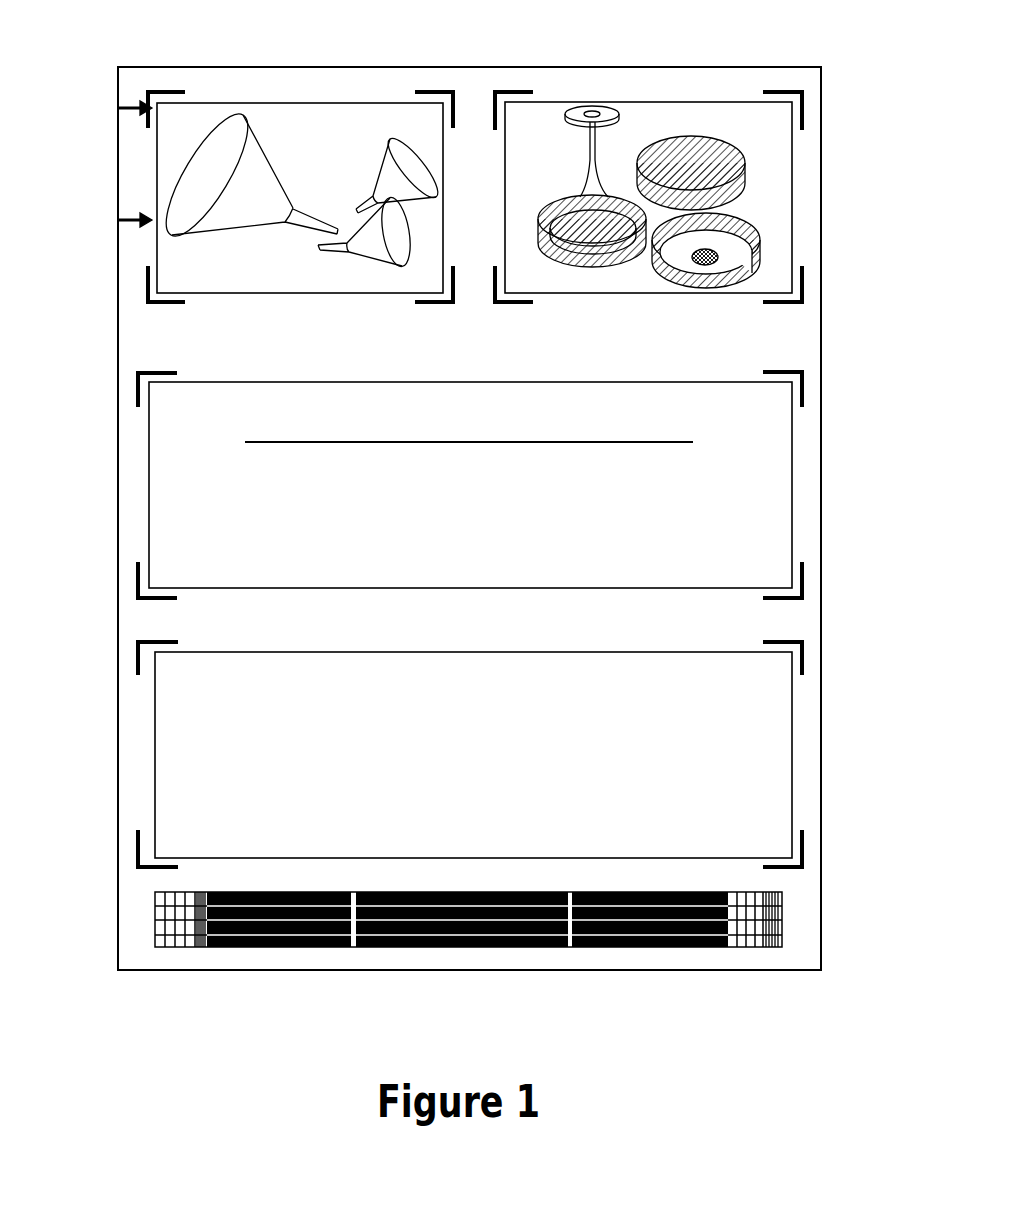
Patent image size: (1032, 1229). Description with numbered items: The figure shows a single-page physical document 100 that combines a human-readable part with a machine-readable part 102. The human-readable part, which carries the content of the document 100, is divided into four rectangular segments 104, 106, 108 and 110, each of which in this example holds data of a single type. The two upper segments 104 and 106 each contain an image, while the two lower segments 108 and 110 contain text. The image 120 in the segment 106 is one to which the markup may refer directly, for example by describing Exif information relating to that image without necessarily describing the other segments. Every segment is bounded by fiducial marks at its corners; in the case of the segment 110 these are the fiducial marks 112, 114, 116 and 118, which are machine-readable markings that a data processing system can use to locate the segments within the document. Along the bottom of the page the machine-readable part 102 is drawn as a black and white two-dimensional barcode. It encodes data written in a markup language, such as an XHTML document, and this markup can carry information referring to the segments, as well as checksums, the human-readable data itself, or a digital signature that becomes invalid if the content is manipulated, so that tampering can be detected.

The physical document 100 is at (727, 1024).
The machine-readable part 102 is at (783, 937).
The segment 104 is at (156, 177).
The segment 106 is at (797, 204).
The segment 108 is at (793, 484).
The segment 110 is at (793, 761).
The fiducial mark 112 is at (137, 652).
The fiducial mark 114 is at (803, 653).
The fiducial mark 116 is at (137, 848).
The fiducial mark 118 is at (803, 848).
The image 120 is at (684, 102).